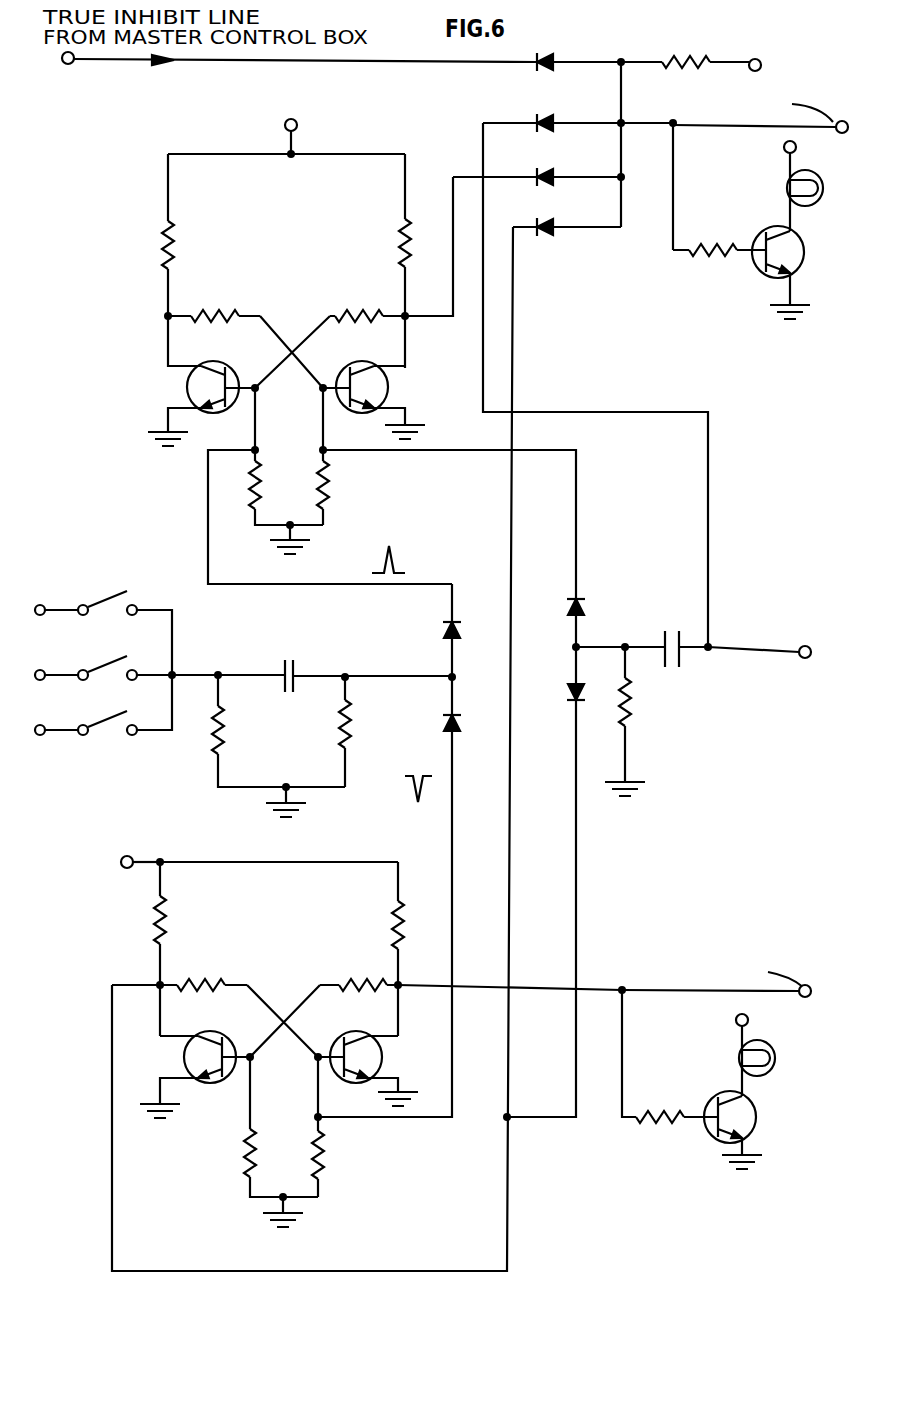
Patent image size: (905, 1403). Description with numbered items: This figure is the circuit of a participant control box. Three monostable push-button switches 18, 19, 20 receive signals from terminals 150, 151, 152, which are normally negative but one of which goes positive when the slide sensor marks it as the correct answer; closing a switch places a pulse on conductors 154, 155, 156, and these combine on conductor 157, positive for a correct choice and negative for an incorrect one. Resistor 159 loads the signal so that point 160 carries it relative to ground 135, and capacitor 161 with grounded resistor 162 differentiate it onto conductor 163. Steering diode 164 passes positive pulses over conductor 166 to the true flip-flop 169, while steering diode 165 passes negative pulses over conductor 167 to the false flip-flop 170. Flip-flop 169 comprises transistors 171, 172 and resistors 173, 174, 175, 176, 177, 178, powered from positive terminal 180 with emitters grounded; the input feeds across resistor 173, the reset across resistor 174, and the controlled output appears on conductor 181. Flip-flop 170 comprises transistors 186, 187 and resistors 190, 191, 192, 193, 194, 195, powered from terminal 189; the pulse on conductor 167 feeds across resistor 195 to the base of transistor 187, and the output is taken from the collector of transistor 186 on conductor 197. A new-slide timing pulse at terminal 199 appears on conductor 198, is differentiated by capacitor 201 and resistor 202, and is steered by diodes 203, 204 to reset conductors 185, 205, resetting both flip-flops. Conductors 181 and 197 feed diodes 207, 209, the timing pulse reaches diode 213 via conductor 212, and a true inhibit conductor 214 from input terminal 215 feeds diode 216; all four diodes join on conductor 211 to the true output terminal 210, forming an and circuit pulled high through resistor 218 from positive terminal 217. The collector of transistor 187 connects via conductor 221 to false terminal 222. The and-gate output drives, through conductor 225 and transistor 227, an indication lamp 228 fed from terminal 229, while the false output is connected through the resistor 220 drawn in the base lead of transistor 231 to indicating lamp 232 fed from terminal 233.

The switch element 18 is at (98, 600).
The switch element 19 is at (98, 665).
The switch element 20 is at (97, 721).
The ground 135 is at (770, 310).
The terminal 150 is at (37, 604).
The terminal 151 is at (37, 668).
The terminal 152 is at (37, 723).
The conductor 154 is at (150, 608).
The conductor 155 is at (148, 672).
The conductor 156 is at (150, 727).
The conductor 157 is at (188, 674).
The resistor 159 is at (224, 740).
The point 160 is at (222, 673).
The capacitor 161 is at (290, 662).
The resistor 162 is at (350, 740).
The conductor 163 is at (370, 675).
The semi-conductor diode 164 is at (458, 632).
The semi-conductor diode 165 is at (445, 725).
The conductor 166 is at (443, 584).
The conductor 167 is at (450, 827).
The true flip-flop 169 is at (285, 322).
The false flip-flop 170 is at (278, 988).
The transistor 171 is at (242, 358).
The transistor 172 is at (373, 368).
The resistor 173 is at (260, 485).
The resistor 174 is at (330, 497).
The resistor 175 is at (163, 242).
The resistor 176 is at (206, 313).
The resistor 177 is at (400, 231).
The resistor 178 is at (357, 313).
The terminal 180 is at (299, 124).
The conductor 181 is at (435, 320).
The conductor 185 is at (458, 453).
The transistor 186 is at (229, 1046).
The transistor 187 is at (355, 1043).
The terminal 189 is at (133, 858).
The resistor 190 is at (166, 918).
The resistor 191 is at (213, 983).
The resistor 192 is at (393, 922).
The resistor 193 is at (364, 983).
The resistor 194 is at (256, 1166).
The resistor 195 is at (327, 1173).
The conductor 197 is at (513, 832).
The conductor 198 is at (740, 653).
The terminal 199 is at (810, 659).
The capacitor 201 is at (670, 631).
The resistor 202 is at (630, 712).
The steering diode 203 is at (582, 610).
The steering diode 204 is at (572, 697).
The conductor 205 is at (578, 850).
The diode 207 is at (552, 172).
The diode 209 is at (545, 232).
The output terminal 210 is at (858, 104).
The conductor 211 is at (742, 127).
The conductor 212 is at (680, 410).
The diode 213 is at (552, 120).
The true inhibit conductor 214 is at (376, 61).
The input terminal 215 is at (64, 62).
The diode 216 is at (552, 58).
The terminal point 217 is at (762, 66).
The resistor 218 is at (700, 62).
The resistor 220 is at (622, 1078).
The conductor 221 is at (595, 988).
The terminal 222 is at (811, 986).
The conductor 225 is at (673, 226).
The transistor 227 is at (797, 262).
The indication lamp 228 is at (821, 190).
The terminal 229 is at (784, 148).
The transistor 231 is at (754, 1100).
The indicating lamp 232 is at (776, 1058).
The terminal 233 is at (735, 1020).